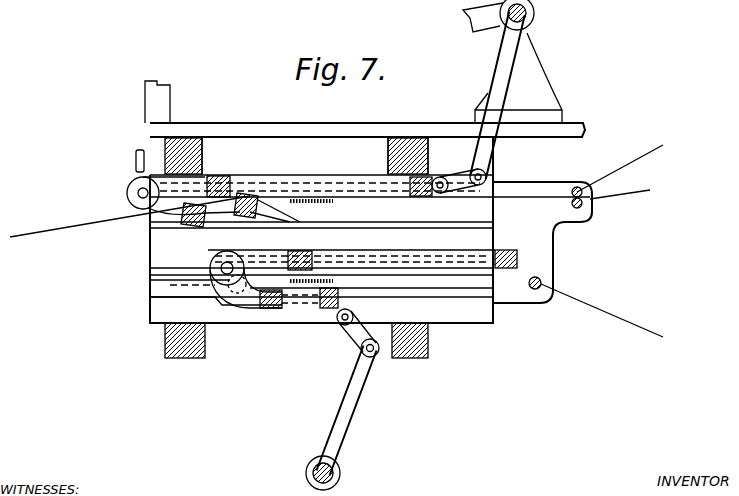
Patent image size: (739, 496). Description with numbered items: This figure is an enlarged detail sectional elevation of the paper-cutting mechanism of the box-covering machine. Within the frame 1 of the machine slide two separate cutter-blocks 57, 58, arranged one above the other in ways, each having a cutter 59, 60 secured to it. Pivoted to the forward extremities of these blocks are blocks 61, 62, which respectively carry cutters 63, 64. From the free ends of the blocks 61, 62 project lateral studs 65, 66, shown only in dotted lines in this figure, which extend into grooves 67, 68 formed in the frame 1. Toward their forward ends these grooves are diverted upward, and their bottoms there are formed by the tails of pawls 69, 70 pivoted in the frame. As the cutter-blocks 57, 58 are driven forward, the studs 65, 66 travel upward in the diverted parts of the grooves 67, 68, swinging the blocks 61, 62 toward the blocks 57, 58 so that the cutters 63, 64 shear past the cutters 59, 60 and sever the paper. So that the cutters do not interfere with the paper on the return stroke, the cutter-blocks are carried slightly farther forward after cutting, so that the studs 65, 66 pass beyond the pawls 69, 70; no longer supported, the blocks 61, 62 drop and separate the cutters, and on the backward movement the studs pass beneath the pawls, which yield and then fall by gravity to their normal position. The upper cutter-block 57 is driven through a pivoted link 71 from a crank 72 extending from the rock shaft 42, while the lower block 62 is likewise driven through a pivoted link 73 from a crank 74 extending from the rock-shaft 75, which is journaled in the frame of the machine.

The frame 1 is at (578, 117).
The rock shaft 42 is at (536, 15).
The cutter-block 57 is at (345, 178).
The cutter-block 58 is at (458, 258).
The cutter 59 is at (228, 168).
The cutter 60 is at (310, 252).
The block 61 is at (142, 208).
The block 62 is at (148, 284).
The cutter 63 is at (210, 226).
The cutter 64 is at (290, 308).
The stud 65 is at (258, 200).
The stud 66 is at (318, 312).
The groove 67 is at (490, 225).
The groove 68 is at (500, 303).
The pawl 69 is at (262, 222).
The pawl 70 is at (246, 306).
The pivoted link 71 is at (462, 178).
The crank 72 is at (497, 53).
The pivoted link 73 is at (348, 324).
The crank 74 is at (348, 413).
The rock-shaft 75 is at (340, 480).